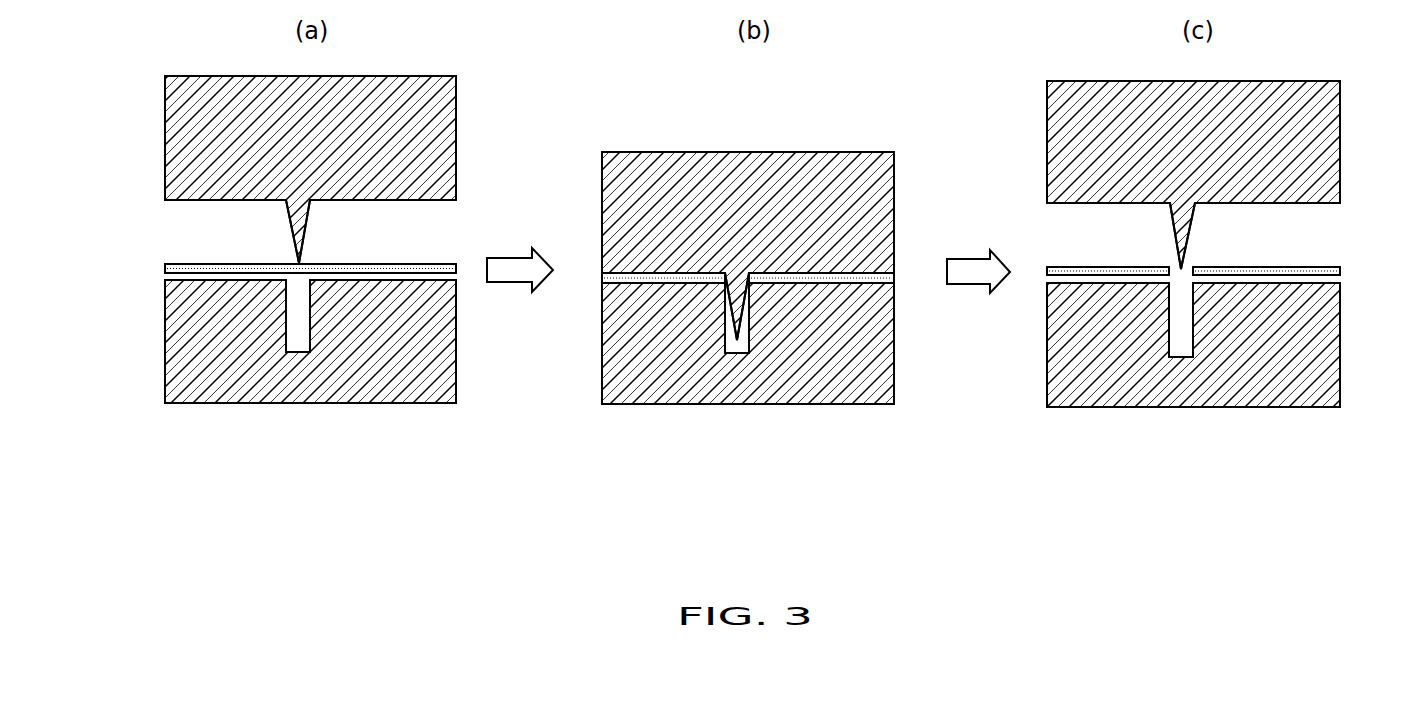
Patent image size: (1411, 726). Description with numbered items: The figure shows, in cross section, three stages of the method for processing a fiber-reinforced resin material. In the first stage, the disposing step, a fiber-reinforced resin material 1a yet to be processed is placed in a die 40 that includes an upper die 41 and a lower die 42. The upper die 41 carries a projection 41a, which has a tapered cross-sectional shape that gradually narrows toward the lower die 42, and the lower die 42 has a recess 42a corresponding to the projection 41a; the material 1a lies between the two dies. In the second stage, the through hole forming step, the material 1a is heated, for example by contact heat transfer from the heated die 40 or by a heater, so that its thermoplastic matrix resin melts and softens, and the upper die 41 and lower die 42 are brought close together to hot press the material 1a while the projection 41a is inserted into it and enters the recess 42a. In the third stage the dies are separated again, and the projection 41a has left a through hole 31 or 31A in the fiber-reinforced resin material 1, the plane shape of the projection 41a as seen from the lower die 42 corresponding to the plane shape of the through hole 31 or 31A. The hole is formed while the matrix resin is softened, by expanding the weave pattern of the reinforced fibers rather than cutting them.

The die 40 is at (100, 165).
The upper die 41 is at (164, 177).
The projection 41a is at (306, 224).
The lower die 42 is at (164, 292).
The recess 42a is at (296, 353).
The fiber-reinforced resin material yet to be processed 1a is at (457, 266).
The fiber-reinforced resin material 1 is at (1220, 259).
The through hole 31 is at (1110, 254).
The through hole 31A is at (1174, 263).